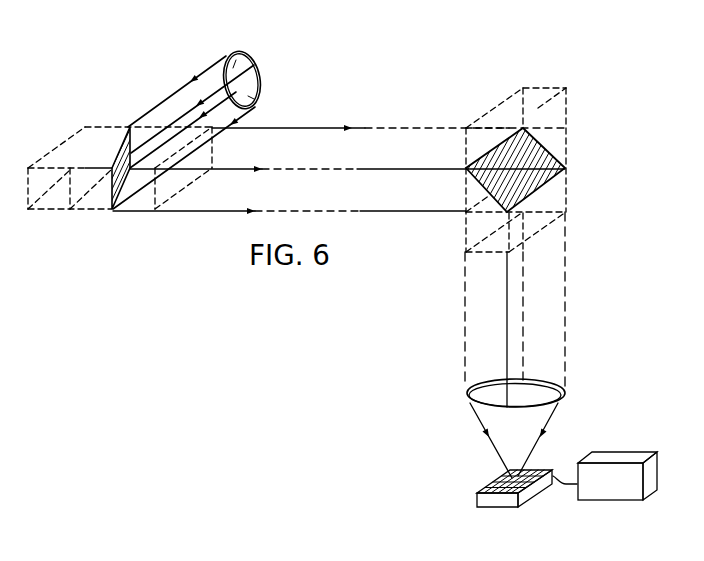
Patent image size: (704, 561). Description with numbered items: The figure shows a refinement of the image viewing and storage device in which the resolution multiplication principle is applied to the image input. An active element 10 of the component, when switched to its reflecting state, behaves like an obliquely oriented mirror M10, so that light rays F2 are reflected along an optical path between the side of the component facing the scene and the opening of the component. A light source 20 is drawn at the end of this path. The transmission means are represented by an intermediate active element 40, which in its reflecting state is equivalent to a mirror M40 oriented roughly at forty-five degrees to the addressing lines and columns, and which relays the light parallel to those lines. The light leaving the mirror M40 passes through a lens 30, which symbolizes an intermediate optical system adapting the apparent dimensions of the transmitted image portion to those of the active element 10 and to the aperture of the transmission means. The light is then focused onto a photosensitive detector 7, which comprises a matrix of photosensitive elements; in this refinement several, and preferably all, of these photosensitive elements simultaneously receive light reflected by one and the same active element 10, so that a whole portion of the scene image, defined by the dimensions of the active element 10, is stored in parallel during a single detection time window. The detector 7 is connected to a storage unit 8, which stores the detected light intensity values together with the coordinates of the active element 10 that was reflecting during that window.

The active element 10 is at (45, 155).
The mirror M10 is at (128, 132).
The light rays F2 is at (208, 68).
The light source 20 is at (242, 53).
The intermediate active element 40 is at (482, 115).
The mirror M40 is at (519, 126).
The lens 30 is at (468, 395).
The photosensitive detector 7 is at (477, 497).
The storage unit 8 is at (633, 462).